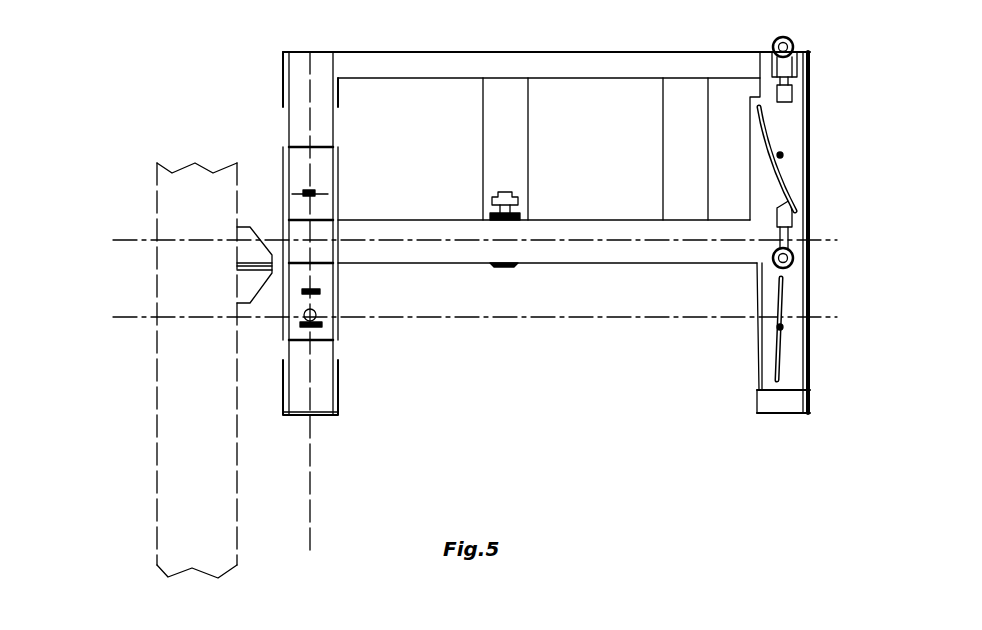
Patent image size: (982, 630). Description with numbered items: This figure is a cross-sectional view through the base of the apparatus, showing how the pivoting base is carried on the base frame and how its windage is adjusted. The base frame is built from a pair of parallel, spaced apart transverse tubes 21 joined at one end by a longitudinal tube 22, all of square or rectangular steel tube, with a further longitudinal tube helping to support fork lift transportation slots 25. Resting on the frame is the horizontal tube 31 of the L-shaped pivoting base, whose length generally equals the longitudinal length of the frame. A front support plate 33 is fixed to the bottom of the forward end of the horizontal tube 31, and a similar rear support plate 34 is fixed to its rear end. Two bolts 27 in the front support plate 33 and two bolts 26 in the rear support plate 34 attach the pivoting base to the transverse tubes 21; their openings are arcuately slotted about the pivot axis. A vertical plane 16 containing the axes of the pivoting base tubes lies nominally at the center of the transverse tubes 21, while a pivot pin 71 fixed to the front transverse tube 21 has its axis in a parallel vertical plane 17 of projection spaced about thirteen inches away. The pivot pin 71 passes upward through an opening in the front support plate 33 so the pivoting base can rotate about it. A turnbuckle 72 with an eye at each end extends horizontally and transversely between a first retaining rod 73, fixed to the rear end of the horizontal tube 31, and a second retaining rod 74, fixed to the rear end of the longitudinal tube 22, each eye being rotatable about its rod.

The vertical plane 16 is at (115, 240).
The vertical plane of projection 17 is at (137, 318).
The transverse tubes 21 is at (285, 120).
The longitudinal tube 22 is at (395, 52).
The fork lift transportation slots 25 is at (528, 117).
The bolts 26 is at (781, 155).
The bolts 27 is at (310, 191).
The horizontal tube 31 is at (583, 262).
The front support plate 33 is at (288, 158).
The rear support plate 34 is at (812, 125).
The pivot pin 71 is at (305, 330).
The turnbuckle 72 is at (753, 90).
The first retaining rod 73 is at (794, 257).
The second retaining rod 74 is at (781, 37).